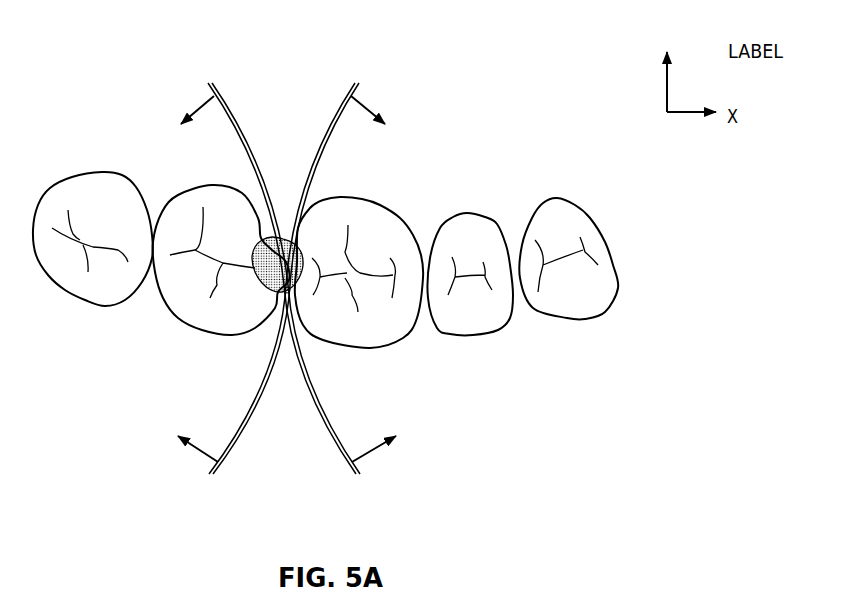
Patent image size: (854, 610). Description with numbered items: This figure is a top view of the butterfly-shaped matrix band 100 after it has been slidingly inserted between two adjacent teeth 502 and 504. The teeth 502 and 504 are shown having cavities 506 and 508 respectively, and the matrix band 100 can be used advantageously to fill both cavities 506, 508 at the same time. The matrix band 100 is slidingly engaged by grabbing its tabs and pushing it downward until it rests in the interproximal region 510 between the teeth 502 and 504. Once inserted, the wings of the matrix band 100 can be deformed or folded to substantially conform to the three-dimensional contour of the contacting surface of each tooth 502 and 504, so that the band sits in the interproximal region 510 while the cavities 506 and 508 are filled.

The matrix band 100 is at (104, 102).
The tooth 502 is at (180, 284).
The tooth 504 is at (390, 330).
The cavity 506 is at (268, 254).
The cavity 508 is at (292, 262).
The interproximal region 510 is at (283, 295).